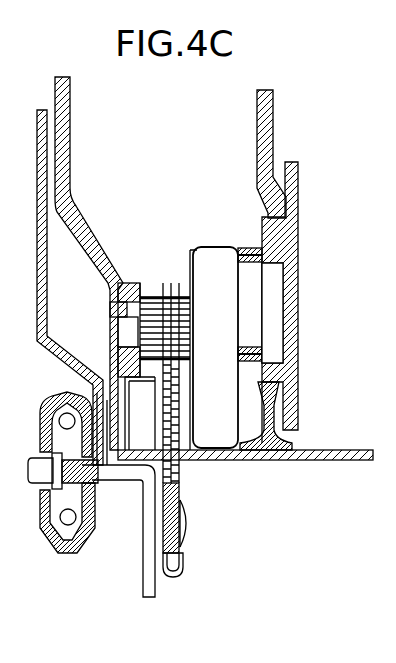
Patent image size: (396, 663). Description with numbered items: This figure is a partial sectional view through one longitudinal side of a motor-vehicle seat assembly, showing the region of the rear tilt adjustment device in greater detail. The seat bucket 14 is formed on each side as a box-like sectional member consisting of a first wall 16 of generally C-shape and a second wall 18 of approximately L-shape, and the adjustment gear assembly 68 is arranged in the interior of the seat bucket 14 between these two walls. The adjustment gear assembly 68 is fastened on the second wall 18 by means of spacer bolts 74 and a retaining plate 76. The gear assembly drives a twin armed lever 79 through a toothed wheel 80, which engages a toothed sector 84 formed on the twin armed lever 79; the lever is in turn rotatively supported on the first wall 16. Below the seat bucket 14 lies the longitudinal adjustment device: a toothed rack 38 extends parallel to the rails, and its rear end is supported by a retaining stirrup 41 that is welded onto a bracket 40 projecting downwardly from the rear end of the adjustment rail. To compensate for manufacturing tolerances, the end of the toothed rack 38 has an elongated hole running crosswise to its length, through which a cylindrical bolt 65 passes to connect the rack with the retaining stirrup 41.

The seat bucket 14 is at (43, 366).
The first wall 16 is at (72, 118).
The second wall 18 is at (263, 125).
The toothed rack 38 is at (181, 489).
The bracket 40 is at (137, 592).
The retaining stirrup 41 is at (186, 571).
The cylindrical bolt 65 is at (192, 530).
The adjustment gear assembly 68 is at (213, 258).
The spacer bolts 74 is at (248, 258).
The retaining plate 76 is at (299, 237).
The twin armed lever 79 is at (180, 478).
The toothed wheel 80 is at (160, 298).
The toothed sector 84 is at (160, 430).